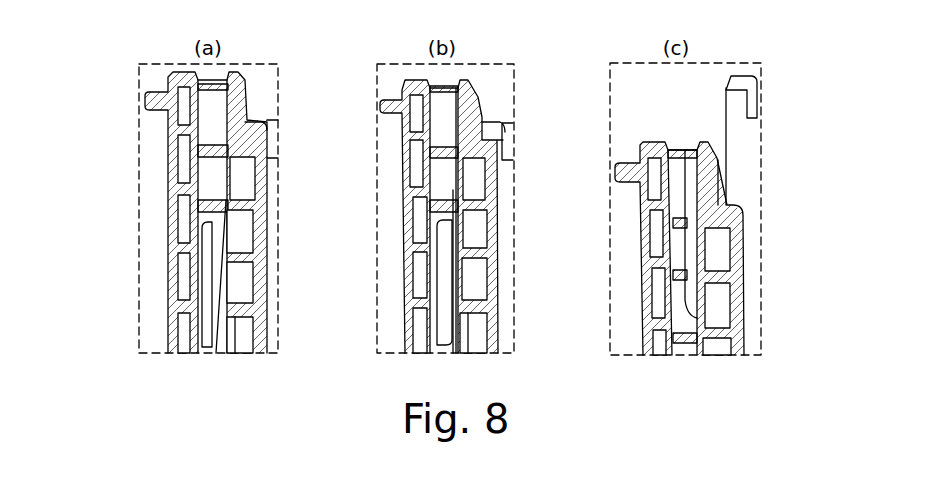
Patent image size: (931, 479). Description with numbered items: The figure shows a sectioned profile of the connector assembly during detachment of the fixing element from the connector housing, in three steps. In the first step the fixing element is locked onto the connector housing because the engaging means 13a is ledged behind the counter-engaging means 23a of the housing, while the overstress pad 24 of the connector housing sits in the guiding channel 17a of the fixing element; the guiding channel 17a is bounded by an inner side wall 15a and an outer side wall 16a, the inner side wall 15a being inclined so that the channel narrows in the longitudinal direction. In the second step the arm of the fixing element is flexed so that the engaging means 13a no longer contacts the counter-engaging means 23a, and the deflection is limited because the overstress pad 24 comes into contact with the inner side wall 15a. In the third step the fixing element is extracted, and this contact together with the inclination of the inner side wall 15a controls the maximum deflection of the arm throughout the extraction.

The engaging means 13a is at (213, 98).
The counter-engaging means 23a is at (243, 127).
The guiding channel 17a is at (213, 177).
The outer side wall 16a is at (208, 212).
The overstress pad 24 is at (210, 270).
The inner side wall 15a is at (213, 308).